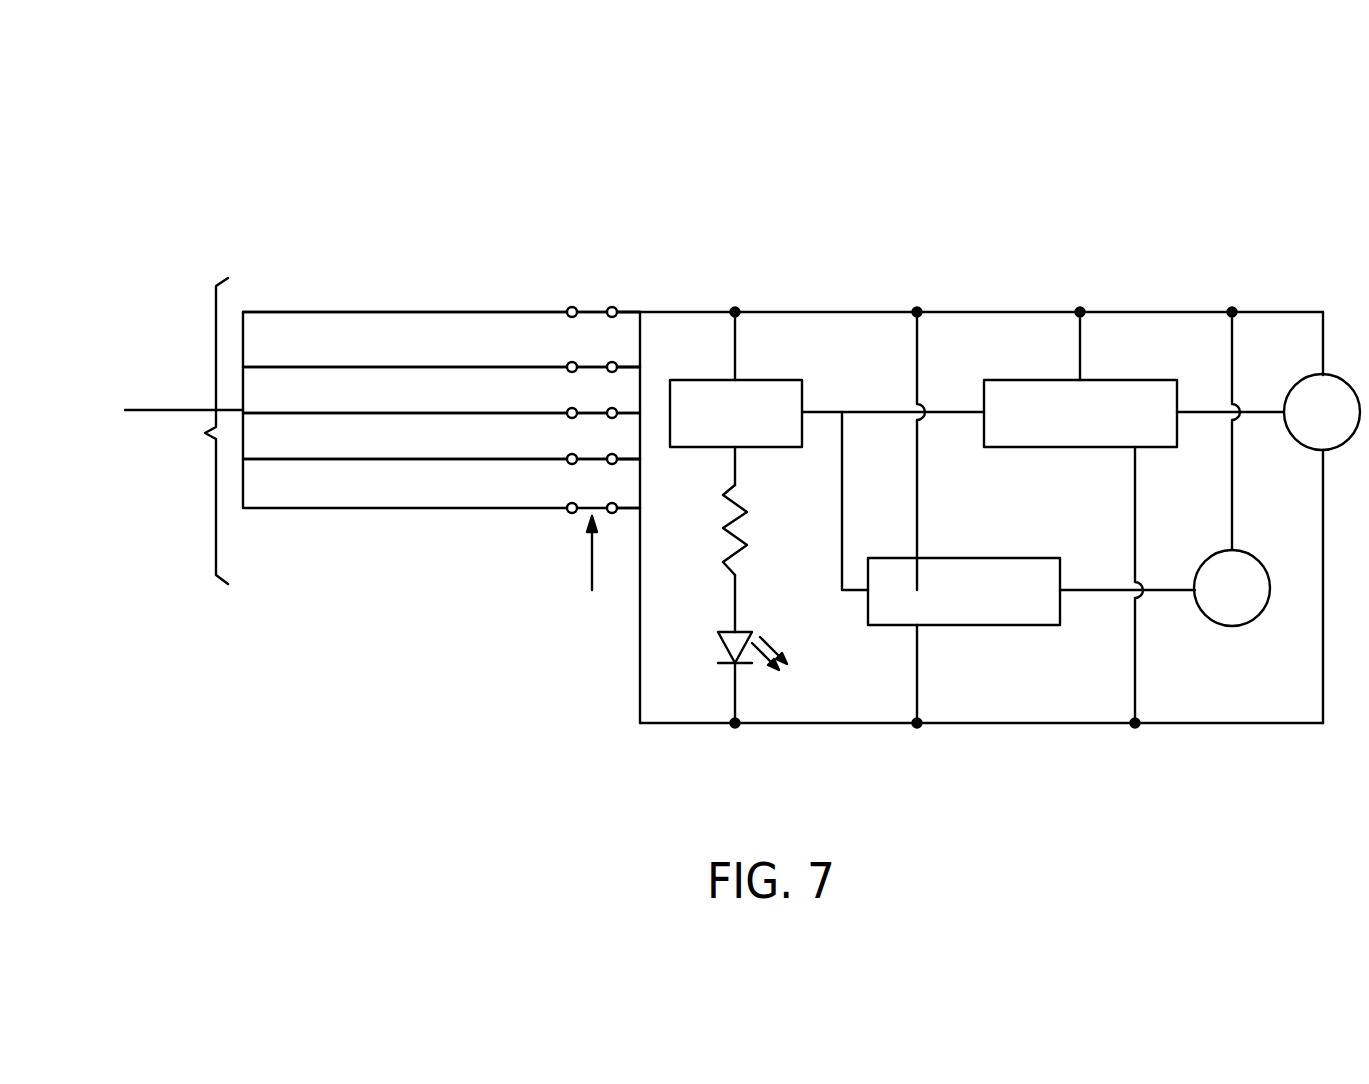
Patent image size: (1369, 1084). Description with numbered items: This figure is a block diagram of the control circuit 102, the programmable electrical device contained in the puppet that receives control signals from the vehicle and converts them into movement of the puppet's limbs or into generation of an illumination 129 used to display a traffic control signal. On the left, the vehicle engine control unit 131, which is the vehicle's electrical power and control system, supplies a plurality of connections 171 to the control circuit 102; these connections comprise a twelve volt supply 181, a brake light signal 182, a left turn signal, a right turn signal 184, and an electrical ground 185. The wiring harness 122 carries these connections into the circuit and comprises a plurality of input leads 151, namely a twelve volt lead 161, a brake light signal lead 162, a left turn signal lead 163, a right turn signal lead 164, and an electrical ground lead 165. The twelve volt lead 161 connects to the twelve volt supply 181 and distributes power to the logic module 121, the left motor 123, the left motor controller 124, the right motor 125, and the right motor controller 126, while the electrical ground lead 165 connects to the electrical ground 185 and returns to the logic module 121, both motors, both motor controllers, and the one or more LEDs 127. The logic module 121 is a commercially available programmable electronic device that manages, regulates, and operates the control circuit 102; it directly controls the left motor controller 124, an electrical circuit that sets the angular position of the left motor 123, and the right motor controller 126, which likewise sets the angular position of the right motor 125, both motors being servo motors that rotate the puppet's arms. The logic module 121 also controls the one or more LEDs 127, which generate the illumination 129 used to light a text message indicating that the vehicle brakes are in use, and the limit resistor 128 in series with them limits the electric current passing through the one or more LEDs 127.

The control circuit 102 is at (216, 184).
The vehicle engine control unit 131 is at (68, 388).
The plurality of connections 171 is at (204, 433).
The 12 volt supply 181 is at (472, 290).
The brake light signal 182 is at (527, 326).
The brake light signal lead 162 is at (622, 412).
The right turn signal 184 is at (520, 442).
The electrical ground 185 is at (413, 500).
The plurality of input leads 151 is at (628, 268).
The 12 volt lead 161 is at (637, 312).
The left turn signal lead 163 is at (620, 367).
The right turn signal lead 164 is at (638, 461).
The electrical ground lead 165 is at (638, 510).
The wiring harness 122 is at (588, 575).
The logic module 121 is at (782, 380).
The limit resistor 128 is at (747, 548).
The one or more LEDs 127 is at (712, 645).
The illumination 129 is at (763, 642).
The left motor controller 124 is at (1127, 380).
The right motor controller 126 is at (1000, 625).
The left motor 123 is at (1342, 377).
The right motor 125 is at (1280, 538).